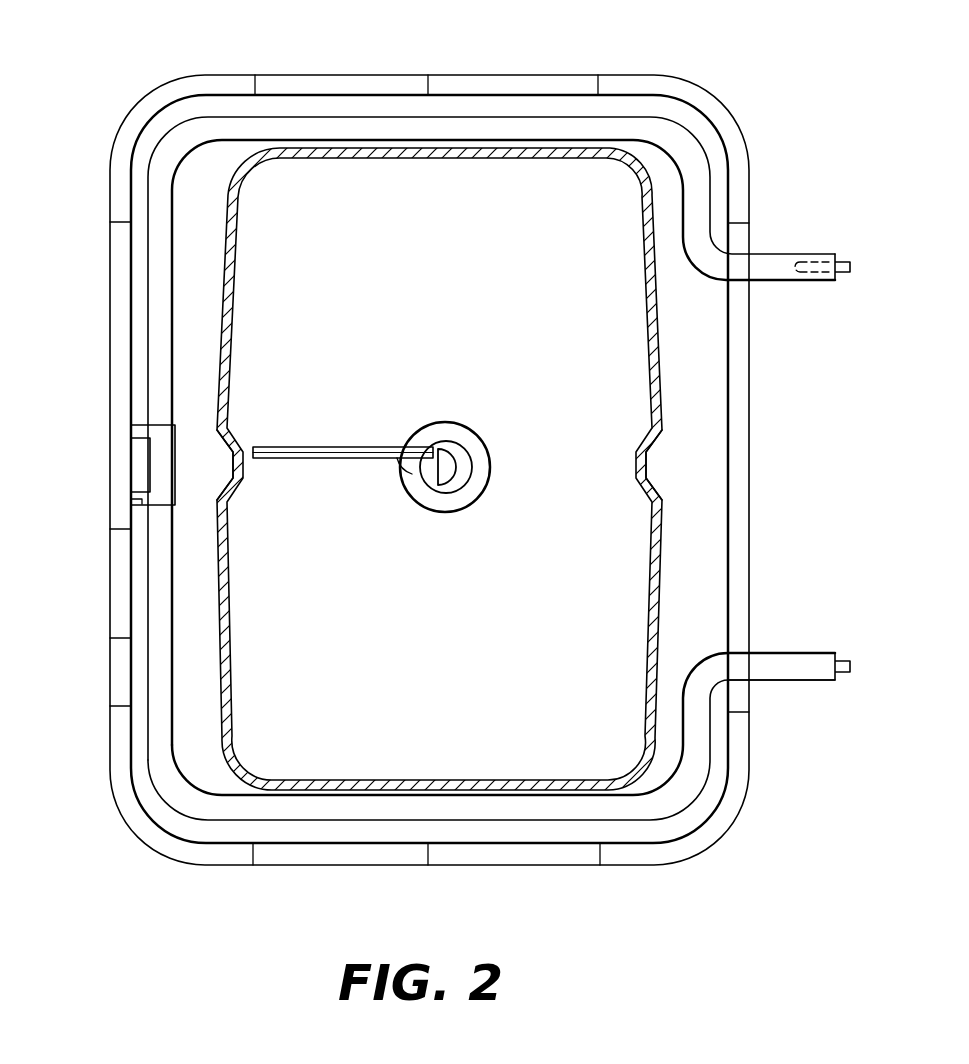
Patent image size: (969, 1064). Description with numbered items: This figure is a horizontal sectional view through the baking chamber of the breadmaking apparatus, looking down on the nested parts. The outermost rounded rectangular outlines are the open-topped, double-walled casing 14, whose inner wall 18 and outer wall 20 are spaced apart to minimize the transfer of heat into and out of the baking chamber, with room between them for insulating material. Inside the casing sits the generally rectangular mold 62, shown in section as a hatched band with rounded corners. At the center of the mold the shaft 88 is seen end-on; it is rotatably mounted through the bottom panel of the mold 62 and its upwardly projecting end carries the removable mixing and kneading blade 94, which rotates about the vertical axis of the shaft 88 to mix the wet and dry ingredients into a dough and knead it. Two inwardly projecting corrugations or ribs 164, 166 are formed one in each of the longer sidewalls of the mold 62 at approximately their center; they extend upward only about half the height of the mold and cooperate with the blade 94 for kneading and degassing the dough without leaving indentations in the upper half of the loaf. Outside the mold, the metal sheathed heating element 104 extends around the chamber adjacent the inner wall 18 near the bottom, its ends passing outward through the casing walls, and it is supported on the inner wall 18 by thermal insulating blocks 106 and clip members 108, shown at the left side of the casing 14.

The double-walled casing 14 is at (378, 58).
The inner wall 18 is at (552, 95).
The outer wall 20 is at (466, 75).
The mold 62 is at (672, 358).
The shaft 88 is at (452, 467).
The mixing and kneading blade 94 is at (358, 450).
The metal sheathed heating element 104 is at (800, 653).
The thermal insulating block 106 is at (140, 503).
The clip member 108 is at (175, 442).
The rib 164 is at (240, 445).
The rib 166 is at (648, 448).